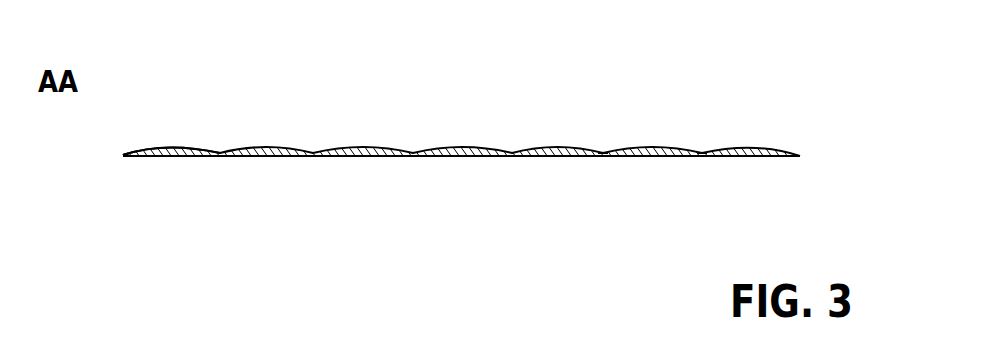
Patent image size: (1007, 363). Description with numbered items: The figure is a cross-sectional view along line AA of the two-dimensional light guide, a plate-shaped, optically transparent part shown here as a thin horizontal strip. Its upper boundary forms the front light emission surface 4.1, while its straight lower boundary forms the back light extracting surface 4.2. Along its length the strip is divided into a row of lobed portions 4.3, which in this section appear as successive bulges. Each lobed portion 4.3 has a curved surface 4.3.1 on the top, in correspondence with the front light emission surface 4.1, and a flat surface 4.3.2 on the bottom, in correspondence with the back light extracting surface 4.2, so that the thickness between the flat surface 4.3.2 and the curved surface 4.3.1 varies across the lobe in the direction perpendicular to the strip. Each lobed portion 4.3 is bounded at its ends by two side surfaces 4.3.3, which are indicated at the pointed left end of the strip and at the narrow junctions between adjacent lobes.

The front light emission surface 4.1 is at (376, 117).
The back light extracting surface 4.2 is at (373, 166).
The lobed portion 4.3 is at (737, 148).
The curved surface 4.3.1 is at (163, 148).
The flat surface 4.3.2 is at (165, 157).
The side surface 4.3.3 is at (123, 155).